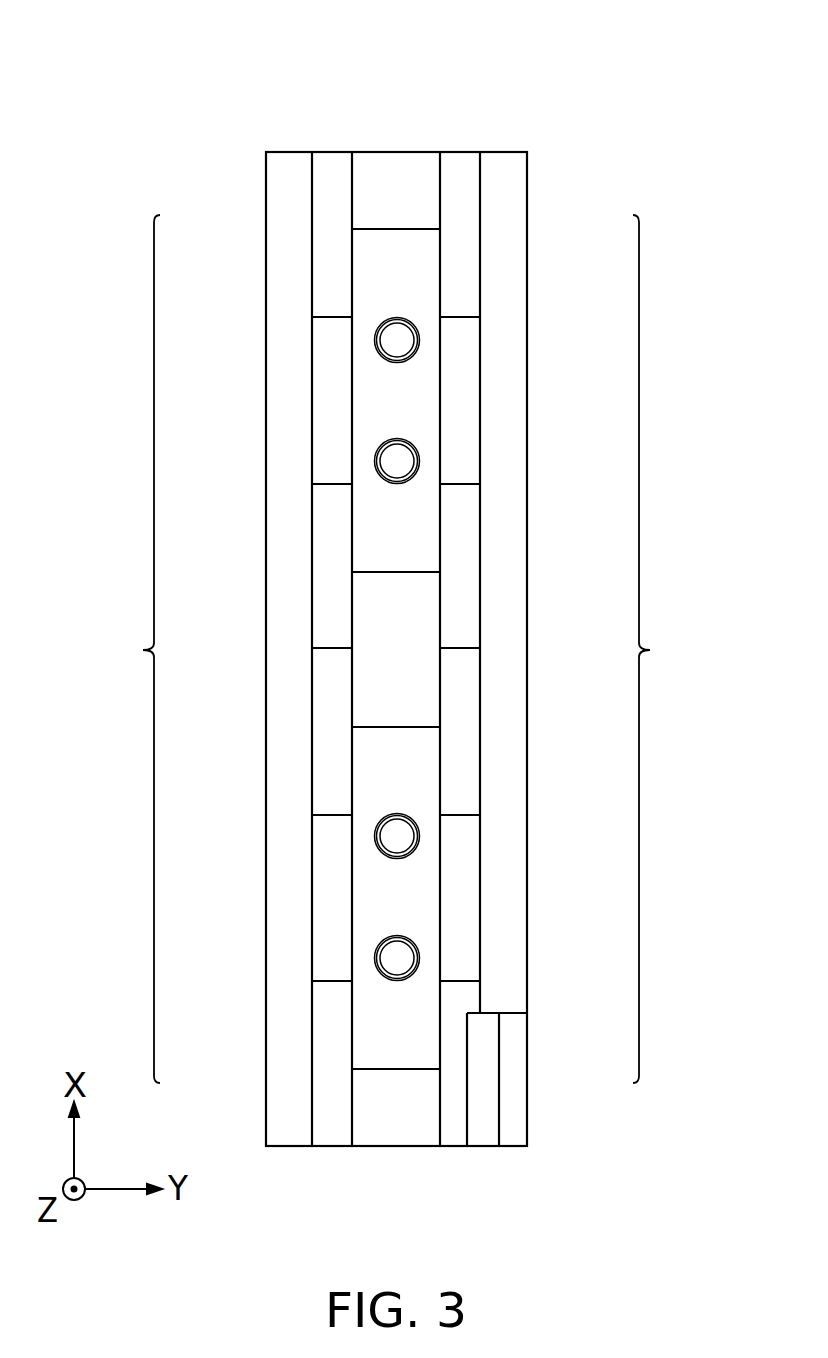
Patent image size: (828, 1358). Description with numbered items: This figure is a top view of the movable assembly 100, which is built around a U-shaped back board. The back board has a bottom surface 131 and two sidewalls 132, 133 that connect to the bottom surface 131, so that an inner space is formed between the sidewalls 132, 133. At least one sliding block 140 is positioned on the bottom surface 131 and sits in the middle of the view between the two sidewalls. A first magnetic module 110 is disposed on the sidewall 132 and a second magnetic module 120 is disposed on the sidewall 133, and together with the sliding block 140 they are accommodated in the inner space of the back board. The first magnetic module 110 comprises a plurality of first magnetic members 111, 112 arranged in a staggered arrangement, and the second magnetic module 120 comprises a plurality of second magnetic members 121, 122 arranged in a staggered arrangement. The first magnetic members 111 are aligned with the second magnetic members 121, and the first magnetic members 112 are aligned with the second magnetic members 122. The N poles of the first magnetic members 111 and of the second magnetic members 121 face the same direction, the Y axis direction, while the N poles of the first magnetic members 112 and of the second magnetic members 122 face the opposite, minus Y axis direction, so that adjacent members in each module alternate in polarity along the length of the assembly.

The movable assembly 100 is at (113, 31).
The first magnetic module 110 is at (667, 649).
The first magnetic members 111 is at (462, 401).
The first magnetic members 112 is at (462, 235).
The second magnetic module 120 is at (126, 649).
The second magnetic members 121 is at (333, 400).
The second magnetic members 122 is at (333, 234).
The bottom surface 131 is at (413, 180).
The sidewall 132 is at (480, 200).
The sidewall 133 is at (313, 200).
The sliding block 140 is at (384, 257).